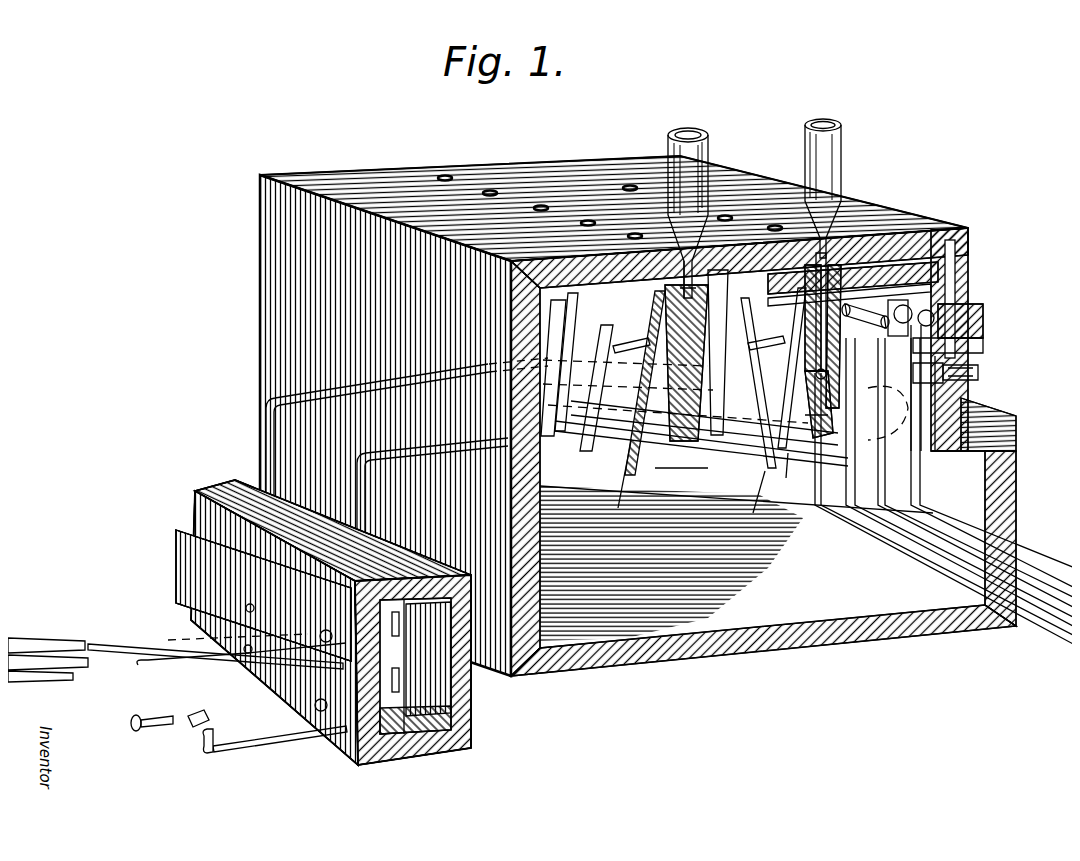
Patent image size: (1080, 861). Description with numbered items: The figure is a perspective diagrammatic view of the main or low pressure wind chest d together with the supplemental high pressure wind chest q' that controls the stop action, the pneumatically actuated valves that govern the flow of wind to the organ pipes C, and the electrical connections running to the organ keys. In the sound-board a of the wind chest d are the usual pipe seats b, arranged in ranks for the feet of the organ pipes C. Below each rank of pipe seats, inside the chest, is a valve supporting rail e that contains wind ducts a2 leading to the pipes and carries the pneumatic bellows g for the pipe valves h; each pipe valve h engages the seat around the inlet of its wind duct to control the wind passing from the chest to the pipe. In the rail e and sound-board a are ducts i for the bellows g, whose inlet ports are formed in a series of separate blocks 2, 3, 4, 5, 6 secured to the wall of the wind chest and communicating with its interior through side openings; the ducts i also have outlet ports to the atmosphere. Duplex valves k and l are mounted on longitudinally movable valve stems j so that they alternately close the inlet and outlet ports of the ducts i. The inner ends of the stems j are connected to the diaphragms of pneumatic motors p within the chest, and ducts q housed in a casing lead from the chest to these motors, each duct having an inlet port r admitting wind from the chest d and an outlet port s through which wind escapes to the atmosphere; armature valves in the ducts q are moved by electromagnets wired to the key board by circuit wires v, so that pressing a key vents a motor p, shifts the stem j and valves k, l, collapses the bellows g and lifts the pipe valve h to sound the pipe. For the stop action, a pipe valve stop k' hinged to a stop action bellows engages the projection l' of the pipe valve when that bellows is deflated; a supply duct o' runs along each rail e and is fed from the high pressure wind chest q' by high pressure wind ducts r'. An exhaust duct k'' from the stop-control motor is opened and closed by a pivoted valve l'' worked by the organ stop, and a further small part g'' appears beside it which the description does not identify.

The sound-board a is at (614, 208).
The pipe seats b is at (580, 190).
The organ pipe C is at (754, 208).
The duct i is at (755, 240).
The supply duct o' is at (825, 243).
The wind duct a2 is at (687, 257).
The low pressure wind chest d is at (736, 563).
The duplex valve k is at (559, 385).
The pneumatic bellows g is at (678, 387).
The valve supporting rail e is at (657, 282).
The pipe valve h is at (660, 310).
The valve stem j is at (687, 470).
The duplex valve l is at (621, 489).
The projection of pipe valve l' is at (753, 507).
The pipe valve stop k' is at (798, 475).
The block 2 is at (865, 294).
The block 3 is at (903, 294).
The block 4 is at (923, 294).
The block 5 is at (898, 307).
The block 6 is at (948, 315).
The pneumatic motor p is at (960, 345).
The duct q is at (953, 366).
The circuit wires v is at (1035, 570).
The high pressure wind duct r' is at (373, 443).
The inlet port r is at (414, 503).
The high pressure wind chest q' is at (347, 622).
The outlet port s is at (263, 620).
The exhaust duct k'' is at (275, 758).
The pivoted valve l'' is at (187, 739).
The screw g'' is at (156, 709).